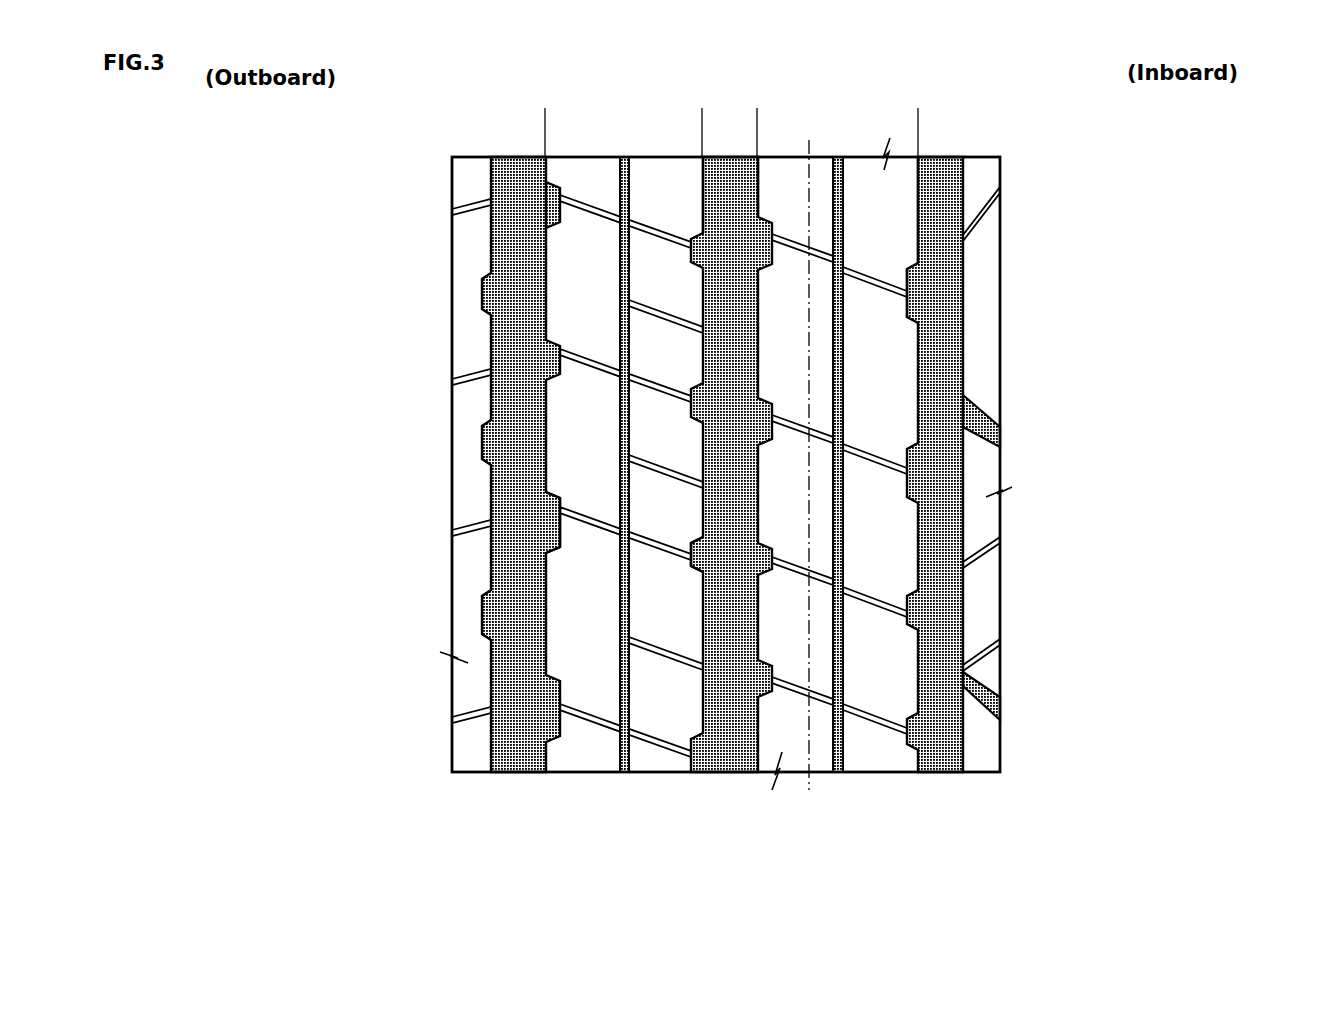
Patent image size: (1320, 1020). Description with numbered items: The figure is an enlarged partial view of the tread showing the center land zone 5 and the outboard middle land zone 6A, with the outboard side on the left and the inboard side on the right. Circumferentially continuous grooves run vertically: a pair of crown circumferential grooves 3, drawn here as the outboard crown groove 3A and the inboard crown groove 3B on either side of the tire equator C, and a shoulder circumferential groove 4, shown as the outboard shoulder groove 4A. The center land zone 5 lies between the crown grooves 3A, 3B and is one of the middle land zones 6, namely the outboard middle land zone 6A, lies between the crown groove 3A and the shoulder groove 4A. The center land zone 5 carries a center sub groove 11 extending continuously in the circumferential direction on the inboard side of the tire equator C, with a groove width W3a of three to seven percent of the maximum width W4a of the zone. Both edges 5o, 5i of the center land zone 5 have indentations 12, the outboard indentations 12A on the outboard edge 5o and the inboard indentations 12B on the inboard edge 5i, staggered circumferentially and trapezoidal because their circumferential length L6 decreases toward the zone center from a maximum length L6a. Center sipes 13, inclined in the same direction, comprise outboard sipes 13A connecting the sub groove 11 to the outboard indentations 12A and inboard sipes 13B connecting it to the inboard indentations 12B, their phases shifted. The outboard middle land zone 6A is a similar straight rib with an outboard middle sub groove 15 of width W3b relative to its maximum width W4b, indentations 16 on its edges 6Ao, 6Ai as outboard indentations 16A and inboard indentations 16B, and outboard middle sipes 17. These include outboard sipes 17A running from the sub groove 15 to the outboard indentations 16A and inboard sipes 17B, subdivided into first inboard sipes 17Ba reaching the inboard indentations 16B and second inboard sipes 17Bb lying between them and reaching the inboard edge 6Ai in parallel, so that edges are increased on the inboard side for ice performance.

The crown circumferential groove 3 is at (837, 494).
The crown circumferential groove 3A is at (737, 717).
The crown circumferential groove 3B is at (948, 717).
The shoulder circumferential groove 4 is at (521, 494).
The shoulder circumferential groove 4A is at (520, 718).
The center land zone 5 is at (887, 742).
The outboard edge of center land zone 5o is at (757, 195).
The inboard edge of center land zone 5i is at (919, 200).
The middle land zone 6 is at (611, 445).
The outboard middle land zone 6A is at (594, 729).
The outboard edge of outboard middle land zone 6Ao is at (545, 235).
The inboard edge of outboard middle land zone 6Ai is at (703, 180).
The center sub groove 11 is at (840, 719).
The indentation 12 is at (958, 469).
The outboard indentation 12A is at (768, 677).
The inboard indentation 12B is at (910, 298).
The center sipe 13 is at (966, 547).
The outboard sipe 13A is at (795, 423).
The inboard sipe 13B is at (866, 458).
The outboard middle sub groove 15 is at (618, 283).
The indentation 16 is at (501, 550).
The outboard indentation 16A is at (556, 508).
The inboard indentation 16B is at (703, 575).
The outboard middle sipe 17 is at (455, 476).
The outboard sipe 17A is at (600, 367).
The inboard sipe 17B is at (482, 488).
The first inboard sipe 17Ba is at (690, 398).
The second inboard sipe 17Bb is at (700, 320).
The tire equator C is at (807, 476).
The maximum width of center land zone W4a is at (918, 118).
The maximum width of outboard middle land zone W4b is at (702, 118).
The groove width of center sub groove W3a is at (803, 348).
The groove width of outboard middle sub groove W3b is at (592, 511).
The circumferential length of indentation L6 is at (1093, 293).
The maximum circumferential length of indentation L6a is at (965, 262).